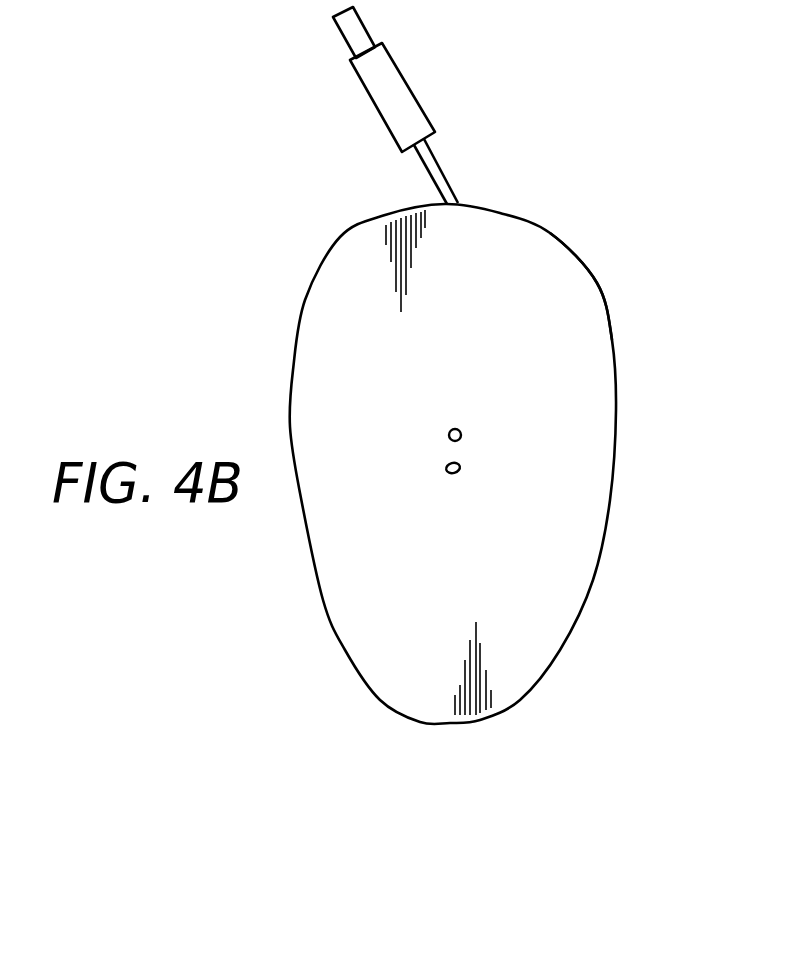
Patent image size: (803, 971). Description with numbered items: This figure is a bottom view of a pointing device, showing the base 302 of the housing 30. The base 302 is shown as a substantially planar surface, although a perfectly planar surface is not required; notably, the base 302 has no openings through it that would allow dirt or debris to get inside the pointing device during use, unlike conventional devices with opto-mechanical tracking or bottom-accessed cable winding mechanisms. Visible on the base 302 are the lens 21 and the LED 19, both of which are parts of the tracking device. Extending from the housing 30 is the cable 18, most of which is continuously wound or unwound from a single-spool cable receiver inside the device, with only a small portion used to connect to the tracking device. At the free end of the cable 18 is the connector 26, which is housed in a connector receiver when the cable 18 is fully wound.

The housing 30 is at (305, 235).
The base 302 is at (598, 278).
The connector 26 is at (372, 103).
The cable 18 is at (440, 163).
The lens 21 is at (465, 430).
The LED 19 is at (463, 462).